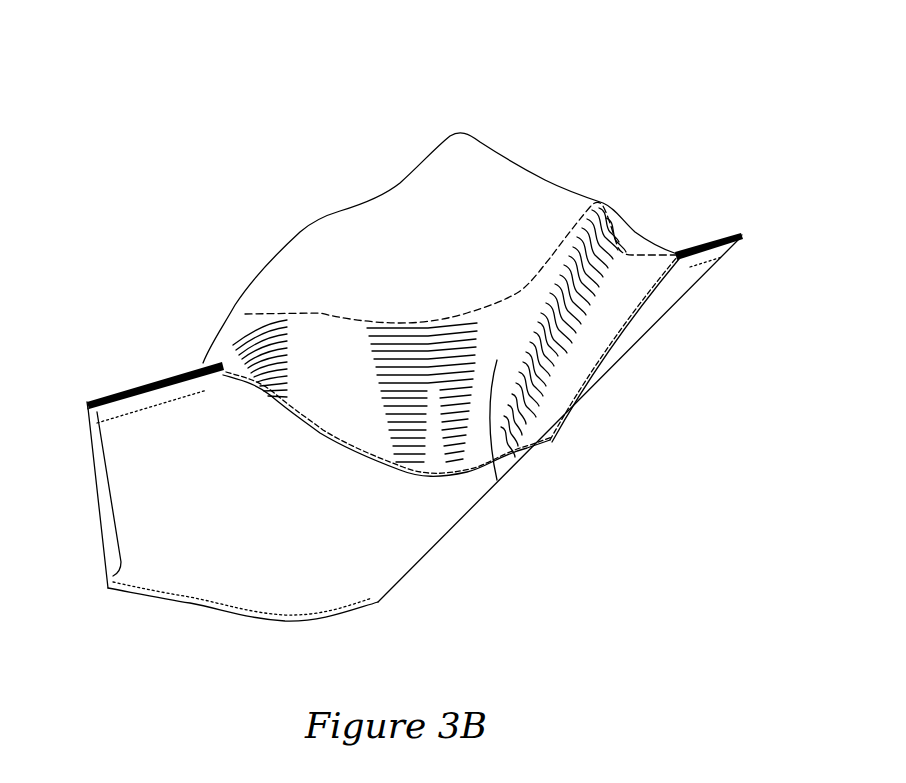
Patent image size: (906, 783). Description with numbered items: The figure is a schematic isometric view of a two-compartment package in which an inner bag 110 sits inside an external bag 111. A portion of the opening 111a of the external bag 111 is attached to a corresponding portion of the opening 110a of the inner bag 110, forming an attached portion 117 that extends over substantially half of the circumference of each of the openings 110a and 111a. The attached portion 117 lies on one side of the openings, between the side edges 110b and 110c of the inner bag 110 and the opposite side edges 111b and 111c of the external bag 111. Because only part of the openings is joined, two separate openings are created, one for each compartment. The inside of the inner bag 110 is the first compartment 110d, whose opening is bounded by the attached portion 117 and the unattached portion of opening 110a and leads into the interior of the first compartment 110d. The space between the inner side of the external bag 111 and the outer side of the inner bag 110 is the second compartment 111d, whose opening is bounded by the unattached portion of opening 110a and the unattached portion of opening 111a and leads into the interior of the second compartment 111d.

The inner bag 110 is at (487, 449).
The opening of the inner bag 110a is at (332, 317).
The side edge of the inner bag opening 110b is at (125, 391).
The side edge of the inner bag opening 110c is at (730, 250).
The first compartment 110d is at (612, 286).
The external bag 111 is at (390, 555).
The opening of the external bag 111a is at (533, 173).
The side edge of the external bag opening 111b is at (143, 380).
The side edge of the external bag opening 111c is at (740, 237).
The second compartment 111d is at (438, 236).
The attached portion 117 is at (617, 333).